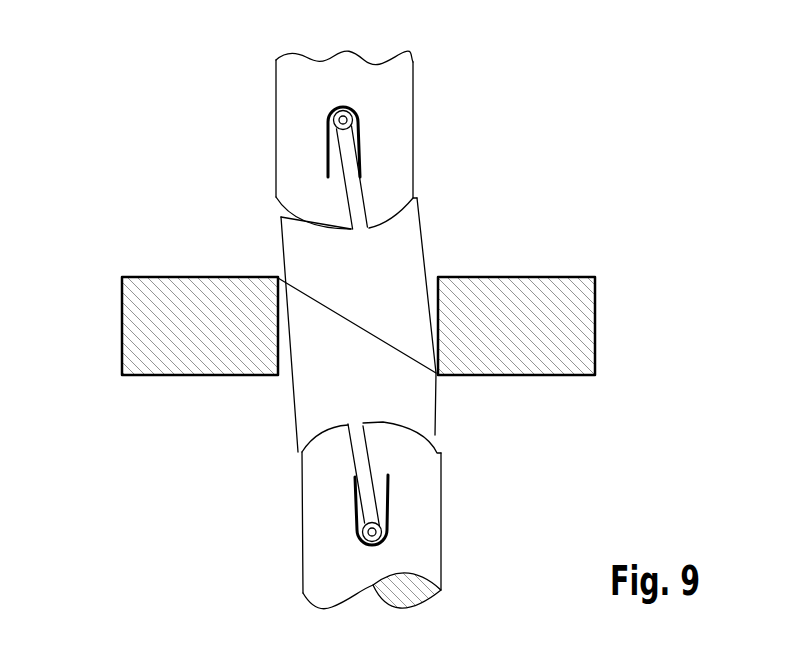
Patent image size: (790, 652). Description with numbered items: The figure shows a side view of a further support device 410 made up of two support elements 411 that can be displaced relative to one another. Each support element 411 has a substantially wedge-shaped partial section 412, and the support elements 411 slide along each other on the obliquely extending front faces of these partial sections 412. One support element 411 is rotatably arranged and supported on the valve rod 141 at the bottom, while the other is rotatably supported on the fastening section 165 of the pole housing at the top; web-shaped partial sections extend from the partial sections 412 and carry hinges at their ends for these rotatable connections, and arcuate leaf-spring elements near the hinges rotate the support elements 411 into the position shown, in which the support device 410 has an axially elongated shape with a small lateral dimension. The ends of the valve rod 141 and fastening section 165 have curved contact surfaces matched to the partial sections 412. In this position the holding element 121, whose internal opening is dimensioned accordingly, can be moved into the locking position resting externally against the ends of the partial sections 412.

The support device 410 is at (296, 235).
The support element 411 is at (303, 247).
The wedge-shaped partial section 412 is at (403, 242).
The holding element 121 is at (147, 290).
The valve rod 141 is at (422, 562).
The fastening section 165 is at (340, 78).